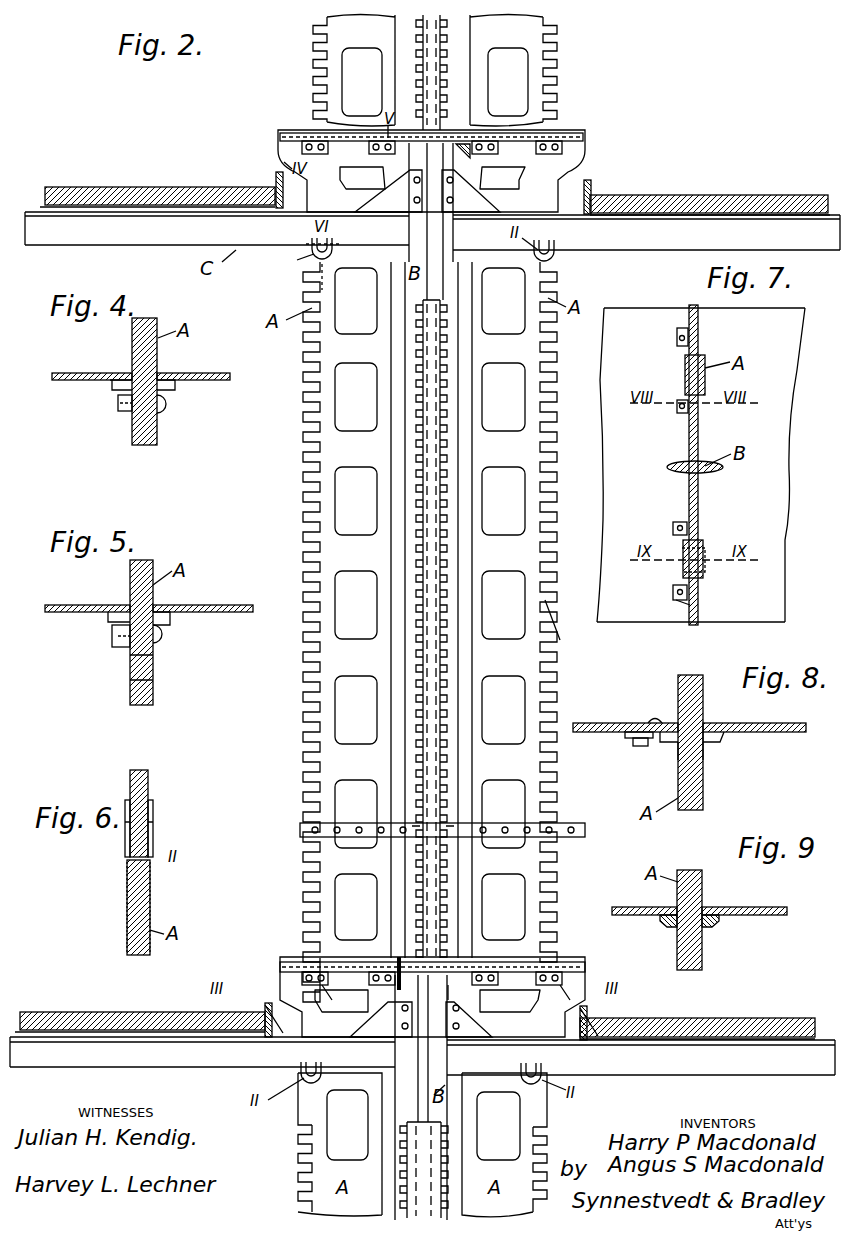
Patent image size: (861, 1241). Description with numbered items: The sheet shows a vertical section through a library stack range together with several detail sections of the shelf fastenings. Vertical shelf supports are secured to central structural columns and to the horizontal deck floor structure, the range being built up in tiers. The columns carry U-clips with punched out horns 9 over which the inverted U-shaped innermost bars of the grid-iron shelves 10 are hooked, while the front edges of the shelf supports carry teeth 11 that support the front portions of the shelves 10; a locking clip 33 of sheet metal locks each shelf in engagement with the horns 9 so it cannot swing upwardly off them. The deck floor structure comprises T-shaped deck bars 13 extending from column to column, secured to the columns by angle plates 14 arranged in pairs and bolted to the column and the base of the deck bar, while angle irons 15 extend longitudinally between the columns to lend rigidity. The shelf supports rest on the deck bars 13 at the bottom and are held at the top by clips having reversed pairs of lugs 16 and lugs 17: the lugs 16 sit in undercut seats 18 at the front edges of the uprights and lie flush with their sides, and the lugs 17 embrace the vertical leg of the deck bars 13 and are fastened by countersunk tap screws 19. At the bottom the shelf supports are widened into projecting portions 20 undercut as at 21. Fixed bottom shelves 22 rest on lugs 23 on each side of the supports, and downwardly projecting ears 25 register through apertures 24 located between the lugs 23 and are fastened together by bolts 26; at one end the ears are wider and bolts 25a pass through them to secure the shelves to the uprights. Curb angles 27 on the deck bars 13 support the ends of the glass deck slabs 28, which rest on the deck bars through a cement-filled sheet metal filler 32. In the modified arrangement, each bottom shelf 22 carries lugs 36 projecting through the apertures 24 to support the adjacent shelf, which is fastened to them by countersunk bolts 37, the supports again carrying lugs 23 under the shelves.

In FIG. 2, the punched out horns 9 is at (448, 337).
In FIG. 2, the shelves 10 is at (348, 823).
In FIG. 2, the teeth 11 is at (548, 620).
In FIG. 2, the deck bars 13 is at (425, 643).
In FIG. 2, the angle plates 14 is at (425, 603).
In FIG. 2, the angle irons 15 is at (460, 145).
In FIG. 2, the lugs 16 is at (318, 264).
In FIG. 6, the lugs 16 is at (126, 888).
In FIG. 2, the lugs 17 is at (312, 240).
In FIG. 6, the lugs 17 is at (128, 806).
In FIG. 6, the undercut seats 18 is at (126, 922).
In FIG. 6, the countersunk tap screws 19 is at (152, 826).
In FIG. 2, the projecting portions 20 is at (290, 958).
In FIG. 2, the undercut 21 is at (282, 1023).
In FIG. 2, the fixed bottom shelves 22 is at (562, 965).
In FIG. 4, the fixed bottom shelves 22 is at (74, 372).
In FIG. 5, the fixed bottom shelves 22 is at (70, 604).
In FIG. 7, the fixed bottom shelves 22 is at (607, 370).
In FIG. 8, the fixed bottom shelves 22 is at (588, 722).
In FIG. 9, the fixed bottom shelves 22 is at (760, 902).
In FIG. 2, the lugs 23 is at (302, 146).
In FIG. 4, the lugs 23 is at (114, 386).
In FIG. 5, the lugs 23 is at (116, 614).
In FIG. 7, the lugs 23 is at (703, 570).
In FIG. 8, the lugs 23 is at (672, 745).
In FIG. 9, the lugs 23 is at (664, 926).
In FIG. 2, the apertures 24 is at (437, 1006).
In FIG. 5, the apertures 24 is at (130, 672).
In FIG. 7, the apertures 24 is at (703, 546).
In FIG. 8, the apertures 24 is at (705, 762).
In FIG. 2, the downwardly projecting ears 25 is at (335, 980).
In FIG. 5, the downwardly projecting ears 25 is at (128, 648).
In FIG. 2, the bolts 25a is at (505, 992).
In FIG. 4, the bolts 25a is at (166, 410).
In FIG. 5, the bolts 26 is at (165, 642).
In FIG. 2, the curb angles 27 is at (592, 188).
In FIG. 2, the deck slabs 28 is at (762, 194).
In FIG. 2, the filler 32 is at (170, 1030).
In FIG. 2, the locking clip 33 is at (418, 826).
In FIG. 7, the lugs 36 is at (700, 340).
In FIG. 8, the lugs 36 is at (626, 738).
In FIG. 7, the countersunk bolts 37 is at (683, 600).
In FIG. 8, the countersunk bolts 37 is at (650, 722).